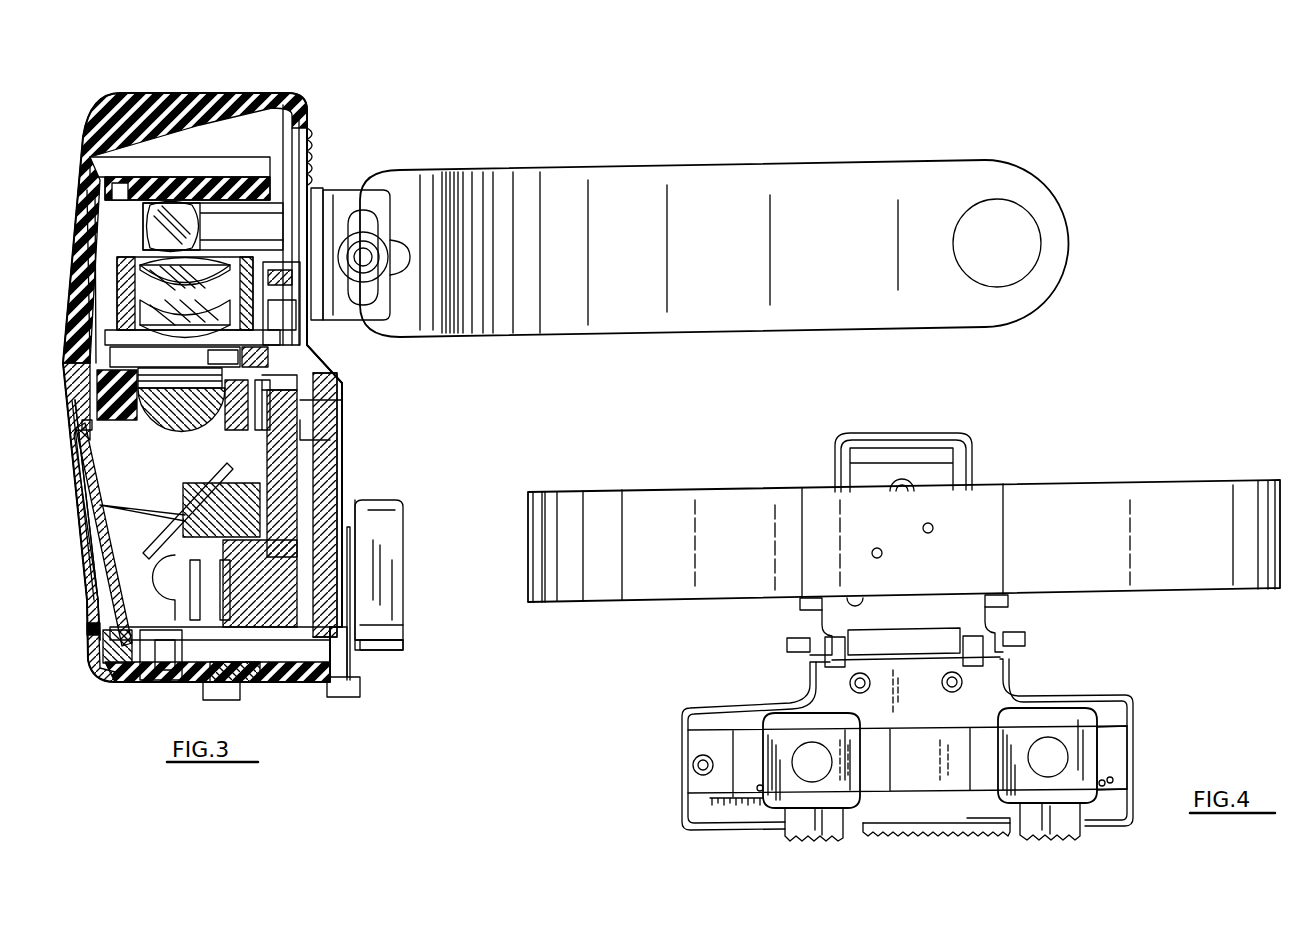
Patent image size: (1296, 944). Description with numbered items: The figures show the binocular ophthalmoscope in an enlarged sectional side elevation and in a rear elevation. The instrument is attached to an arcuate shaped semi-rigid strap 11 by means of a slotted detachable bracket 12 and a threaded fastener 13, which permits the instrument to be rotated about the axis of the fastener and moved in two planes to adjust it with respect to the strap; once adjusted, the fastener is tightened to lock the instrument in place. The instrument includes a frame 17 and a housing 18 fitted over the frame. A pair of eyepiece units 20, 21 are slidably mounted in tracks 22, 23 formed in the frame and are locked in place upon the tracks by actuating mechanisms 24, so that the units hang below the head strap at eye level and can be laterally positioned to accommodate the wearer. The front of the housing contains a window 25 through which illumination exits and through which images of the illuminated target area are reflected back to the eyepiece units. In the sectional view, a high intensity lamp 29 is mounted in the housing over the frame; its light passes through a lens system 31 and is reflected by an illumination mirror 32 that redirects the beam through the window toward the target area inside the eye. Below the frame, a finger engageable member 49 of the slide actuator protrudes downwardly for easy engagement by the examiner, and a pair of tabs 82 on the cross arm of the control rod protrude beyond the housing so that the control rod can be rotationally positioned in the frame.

In FIG. 3, the strap 11 is at (850, 165).
In FIG. 4, the strap 11 is at (1090, 480).
In FIG. 3, the slotted detachable bracket 12 is at (353, 190).
In FIG. 3, the threaded fastener 13 is at (370, 190).
In FIG. 3, the frame 17 is at (370, 439).
In FIG. 4, the frame 17 is at (1012, 675).
In FIG. 3, the housing 18 is at (150, 94).
In FIG. 3, the eyepiece unit 20 is at (408, 523).
In FIG. 4, the eyepiece unit 20 is at (763, 777).
In FIG. 3, the eyepiece unit 21 is at (379, 575).
In FIG. 4, the eyepiece unit 21 is at (995, 795).
In FIG. 4, the track 22 is at (700, 787).
In FIG. 4, the track 23 is at (1115, 750).
In FIG. 4, the actuating mechanism 24 is at (805, 828).
In FIG. 3, the window 25 is at (78, 572).
In FIG. 3, the high intensity lamp 29 is at (190, 205).
In FIG. 3, the lens system 31 is at (148, 433).
In FIG. 3, the illumination mirror 32 is at (185, 510).
In FIG. 4, the finger engageable member 49 is at (985, 838).
In FIG. 4, the tab 82 is at (787, 646).